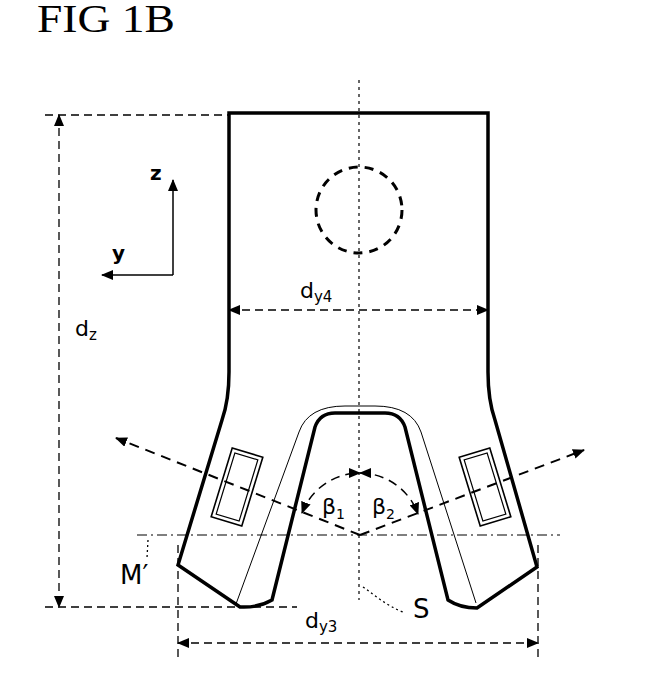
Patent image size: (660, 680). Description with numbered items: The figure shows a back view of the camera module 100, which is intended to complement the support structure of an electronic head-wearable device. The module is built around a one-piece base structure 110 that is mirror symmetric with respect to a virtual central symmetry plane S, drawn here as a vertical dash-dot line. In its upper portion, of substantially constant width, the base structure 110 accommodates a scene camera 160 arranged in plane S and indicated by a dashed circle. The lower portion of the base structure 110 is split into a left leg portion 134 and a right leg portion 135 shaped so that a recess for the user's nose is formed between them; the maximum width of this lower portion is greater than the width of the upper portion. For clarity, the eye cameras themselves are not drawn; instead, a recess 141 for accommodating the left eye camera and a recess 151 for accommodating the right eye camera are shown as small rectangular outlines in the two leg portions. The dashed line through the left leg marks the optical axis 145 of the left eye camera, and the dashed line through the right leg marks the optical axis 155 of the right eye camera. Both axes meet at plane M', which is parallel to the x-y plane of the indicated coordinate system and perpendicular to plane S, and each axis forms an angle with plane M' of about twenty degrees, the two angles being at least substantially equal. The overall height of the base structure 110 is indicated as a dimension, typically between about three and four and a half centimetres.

The camera module 100 is at (394, 57).
The one-piece base structure 110 is at (464, 106).
The left leg portion 134 is at (186, 505).
The right leg portion 135 is at (533, 503).
The recess 141 is at (244, 445).
The recess 151 is at (466, 445).
The optical axis 145 is at (165, 440).
The optical axis 155 is at (543, 442).
The scene camera 160 is at (410, 212).